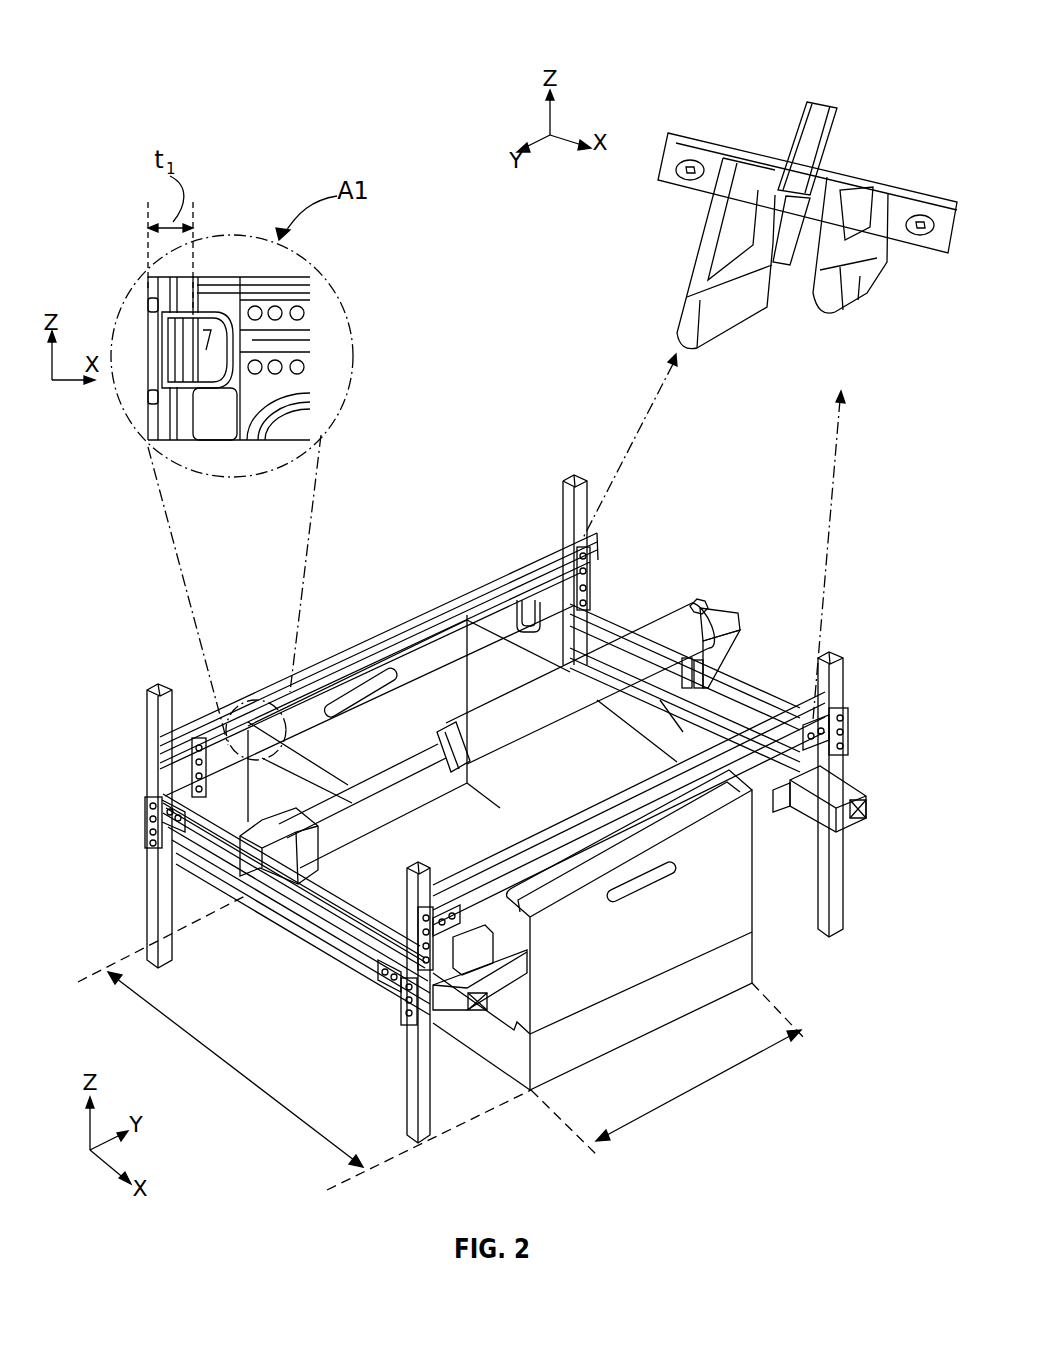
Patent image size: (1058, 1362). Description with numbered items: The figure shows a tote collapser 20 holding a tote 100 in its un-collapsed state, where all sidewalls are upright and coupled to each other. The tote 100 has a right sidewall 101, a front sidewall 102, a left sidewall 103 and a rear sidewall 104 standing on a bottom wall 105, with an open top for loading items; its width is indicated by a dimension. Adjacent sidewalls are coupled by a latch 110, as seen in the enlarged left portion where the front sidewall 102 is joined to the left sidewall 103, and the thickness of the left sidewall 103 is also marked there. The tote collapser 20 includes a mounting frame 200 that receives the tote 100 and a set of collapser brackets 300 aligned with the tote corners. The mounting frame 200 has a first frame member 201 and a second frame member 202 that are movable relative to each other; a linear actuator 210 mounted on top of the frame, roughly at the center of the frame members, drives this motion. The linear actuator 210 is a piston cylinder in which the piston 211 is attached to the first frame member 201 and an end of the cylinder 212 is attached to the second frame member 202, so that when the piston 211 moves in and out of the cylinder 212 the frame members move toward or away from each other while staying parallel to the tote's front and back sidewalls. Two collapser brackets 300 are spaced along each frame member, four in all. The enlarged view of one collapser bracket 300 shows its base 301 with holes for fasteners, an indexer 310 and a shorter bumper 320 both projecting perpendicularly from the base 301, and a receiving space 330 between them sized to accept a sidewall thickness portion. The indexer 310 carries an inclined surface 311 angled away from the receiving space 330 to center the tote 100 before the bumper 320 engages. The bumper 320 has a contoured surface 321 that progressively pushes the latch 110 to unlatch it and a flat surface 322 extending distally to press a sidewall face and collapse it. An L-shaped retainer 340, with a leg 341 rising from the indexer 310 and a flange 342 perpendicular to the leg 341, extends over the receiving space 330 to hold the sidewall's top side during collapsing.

The tote collapser 20 is at (514, 438).
The tote 100 is at (812, 982).
The right sidewall 101 is at (560, 1053).
The front sidewall 102 is at (306, 303).
The left sidewall 103 is at (146, 322).
The rear sidewall 104 is at (637, 747).
The bottom wall 105 is at (456, 848).
The latch 110 is at (146, 386).
The mounting frame 200 is at (489, 552).
The first frame member 201 is at (327, 907).
The second frame member 202 is at (629, 618).
The linear actuator 210 is at (252, 820).
The piston 211 is at (370, 800).
The cylinder 212 is at (692, 626).
The collapser bracket 300 is at (515, 563).
The base 301 is at (670, 132).
The indexer 310 is at (688, 275).
The inclined surface 311 is at (720, 312).
The bumper 320 is at (885, 273).
The contoured surface 321 is at (826, 300).
The flat surface 322 is at (866, 294).
The receiving space 330 is at (794, 278).
The retainer 340 is at (787, 180).
The leg 341 is at (772, 230).
The flange 342 is at (820, 100).